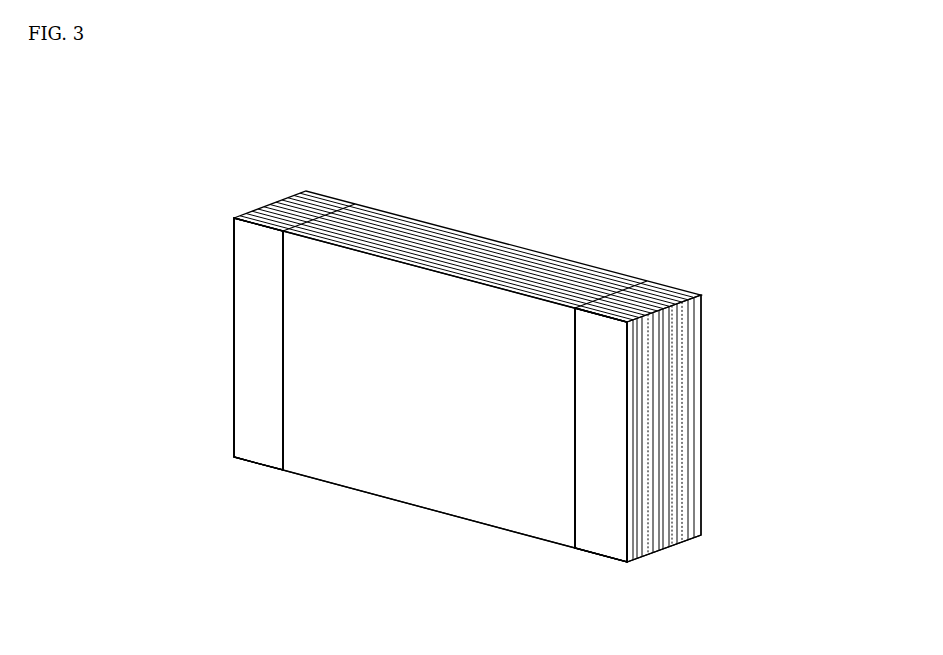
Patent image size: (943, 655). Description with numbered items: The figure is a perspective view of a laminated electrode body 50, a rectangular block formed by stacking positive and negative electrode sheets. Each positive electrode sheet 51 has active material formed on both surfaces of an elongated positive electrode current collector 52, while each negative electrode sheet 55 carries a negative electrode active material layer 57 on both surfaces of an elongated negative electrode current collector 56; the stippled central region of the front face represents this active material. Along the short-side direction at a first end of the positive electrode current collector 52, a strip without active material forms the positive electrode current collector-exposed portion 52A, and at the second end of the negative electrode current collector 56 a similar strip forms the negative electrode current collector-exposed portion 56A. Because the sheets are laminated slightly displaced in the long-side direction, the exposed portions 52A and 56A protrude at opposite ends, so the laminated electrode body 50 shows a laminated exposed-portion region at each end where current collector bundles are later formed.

The laminated electrode body 50 is at (724, 172).
The positive electrode sheet 51 is at (703, 350).
The positive electrode current collector 52 is at (695, 435).
The positive electrode current collector-exposed portion 52A is at (595, 542).
The negative electrode sheet 55 is at (232, 325).
The negative electrode current collector 56 is at (195, 344).
The negative electrode current collector-exposed portion 56A is at (250, 397).
The negative electrode active material layer 57 is at (412, 495).